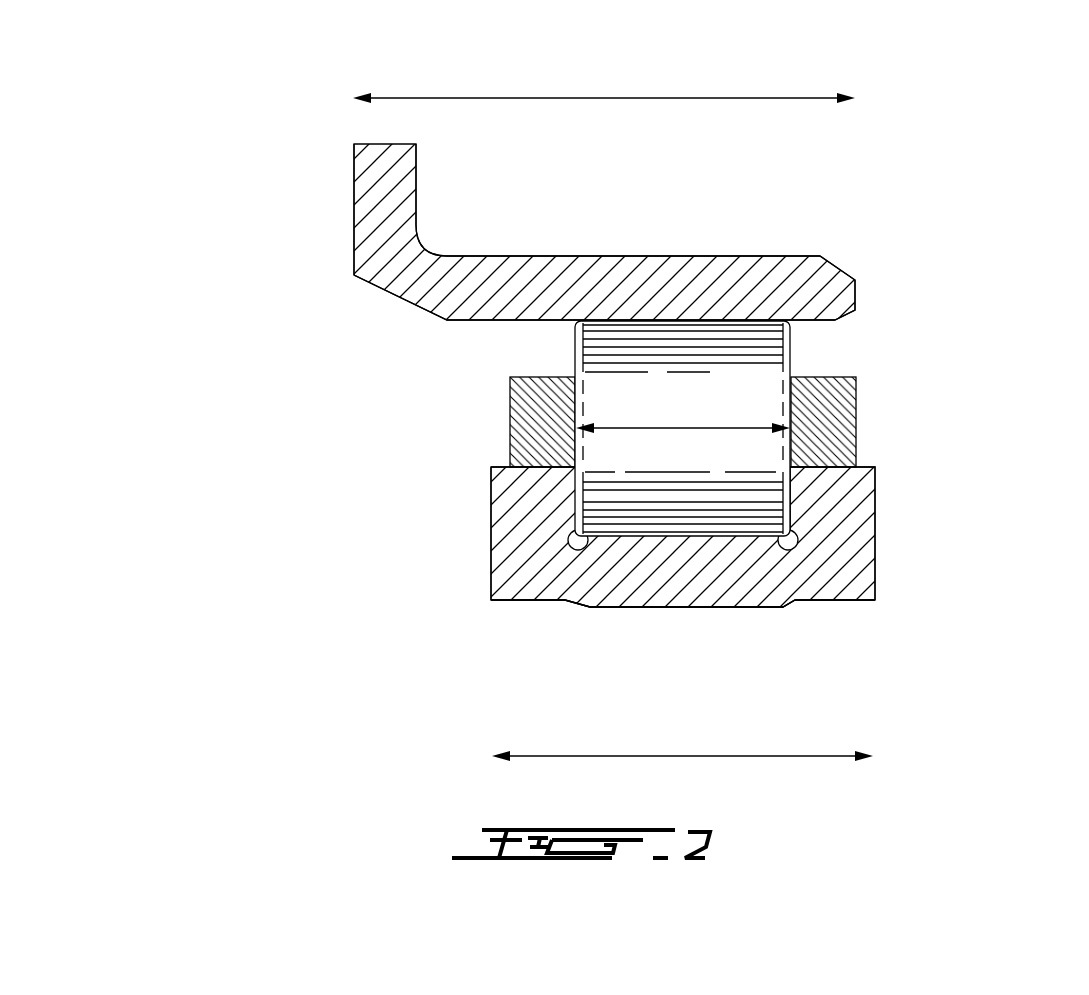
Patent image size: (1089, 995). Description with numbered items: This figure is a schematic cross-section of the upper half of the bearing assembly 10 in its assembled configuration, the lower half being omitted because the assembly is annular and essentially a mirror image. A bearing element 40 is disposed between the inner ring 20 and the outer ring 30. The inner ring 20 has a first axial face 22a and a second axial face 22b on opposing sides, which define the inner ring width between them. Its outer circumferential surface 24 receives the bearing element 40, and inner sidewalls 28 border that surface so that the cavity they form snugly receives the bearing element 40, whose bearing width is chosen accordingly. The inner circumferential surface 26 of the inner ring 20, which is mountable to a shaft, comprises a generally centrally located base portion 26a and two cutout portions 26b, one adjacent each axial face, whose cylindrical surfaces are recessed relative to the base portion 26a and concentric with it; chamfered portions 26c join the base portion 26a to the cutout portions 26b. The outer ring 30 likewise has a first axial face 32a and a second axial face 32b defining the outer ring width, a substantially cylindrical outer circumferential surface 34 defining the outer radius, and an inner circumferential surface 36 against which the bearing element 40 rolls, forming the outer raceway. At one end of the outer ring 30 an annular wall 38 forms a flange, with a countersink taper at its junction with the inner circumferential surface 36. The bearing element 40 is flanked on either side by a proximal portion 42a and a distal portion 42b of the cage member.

The bearing assembly 10 is at (233, 119).
The inner ring 20 is at (447, 585).
The first axial face 22a is at (491, 532).
The second axial face 22b is at (877, 545).
The outer circumferential surface 24 is at (698, 538).
The inner circumferential surface 26 is at (673, 638).
The base portion 26a is at (613, 607).
The cutout portion 26b is at (522, 600).
The chamfered portion 26c is at (574, 601).
The inner sidewall 28 is at (575, 486).
The outer ring 30 is at (306, 263).
The first axial face 32a is at (354, 217).
The second axial face 32b is at (855, 292).
The outer circumferential surface 34 is at (630, 256).
The inner circumferential surface 36 is at (497, 320).
The wall 38 is at (416, 193).
The bearing element 40 is at (732, 378).
The proximal portion 42a is at (527, 420).
The distal portion 42b is at (835, 420).